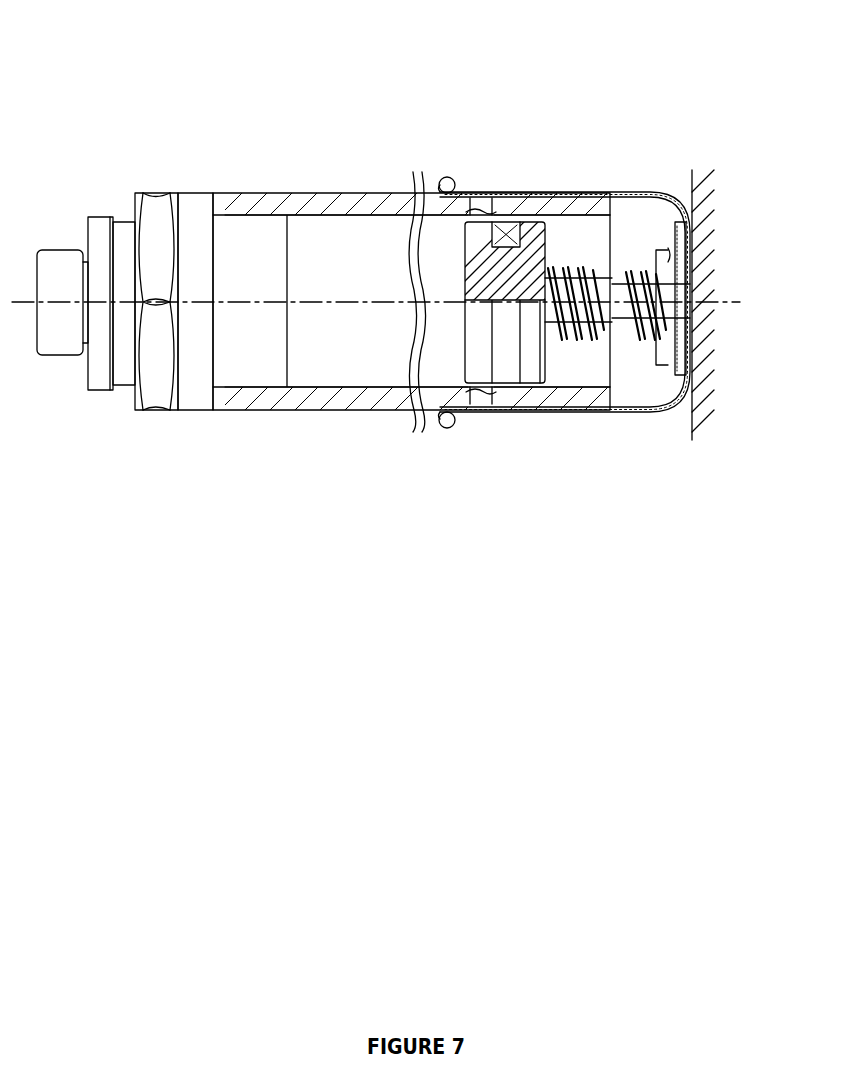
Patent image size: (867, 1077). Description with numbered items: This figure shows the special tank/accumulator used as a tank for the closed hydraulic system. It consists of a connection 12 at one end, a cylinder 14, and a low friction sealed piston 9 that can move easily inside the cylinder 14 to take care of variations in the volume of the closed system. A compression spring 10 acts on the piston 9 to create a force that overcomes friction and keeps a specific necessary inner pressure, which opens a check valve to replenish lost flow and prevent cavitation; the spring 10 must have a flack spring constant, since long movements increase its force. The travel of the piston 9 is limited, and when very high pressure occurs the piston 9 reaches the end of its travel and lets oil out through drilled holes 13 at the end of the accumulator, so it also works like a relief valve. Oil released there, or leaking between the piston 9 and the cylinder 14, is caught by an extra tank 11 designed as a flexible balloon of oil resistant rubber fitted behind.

The piston 9 is at (488, 230).
The compression spring 10 is at (593, 320).
The extra tank 11 is at (593, 408).
The connection 12 is at (144, 400).
The drilled holes 13 is at (478, 400).
The cylinder 14 is at (260, 198).